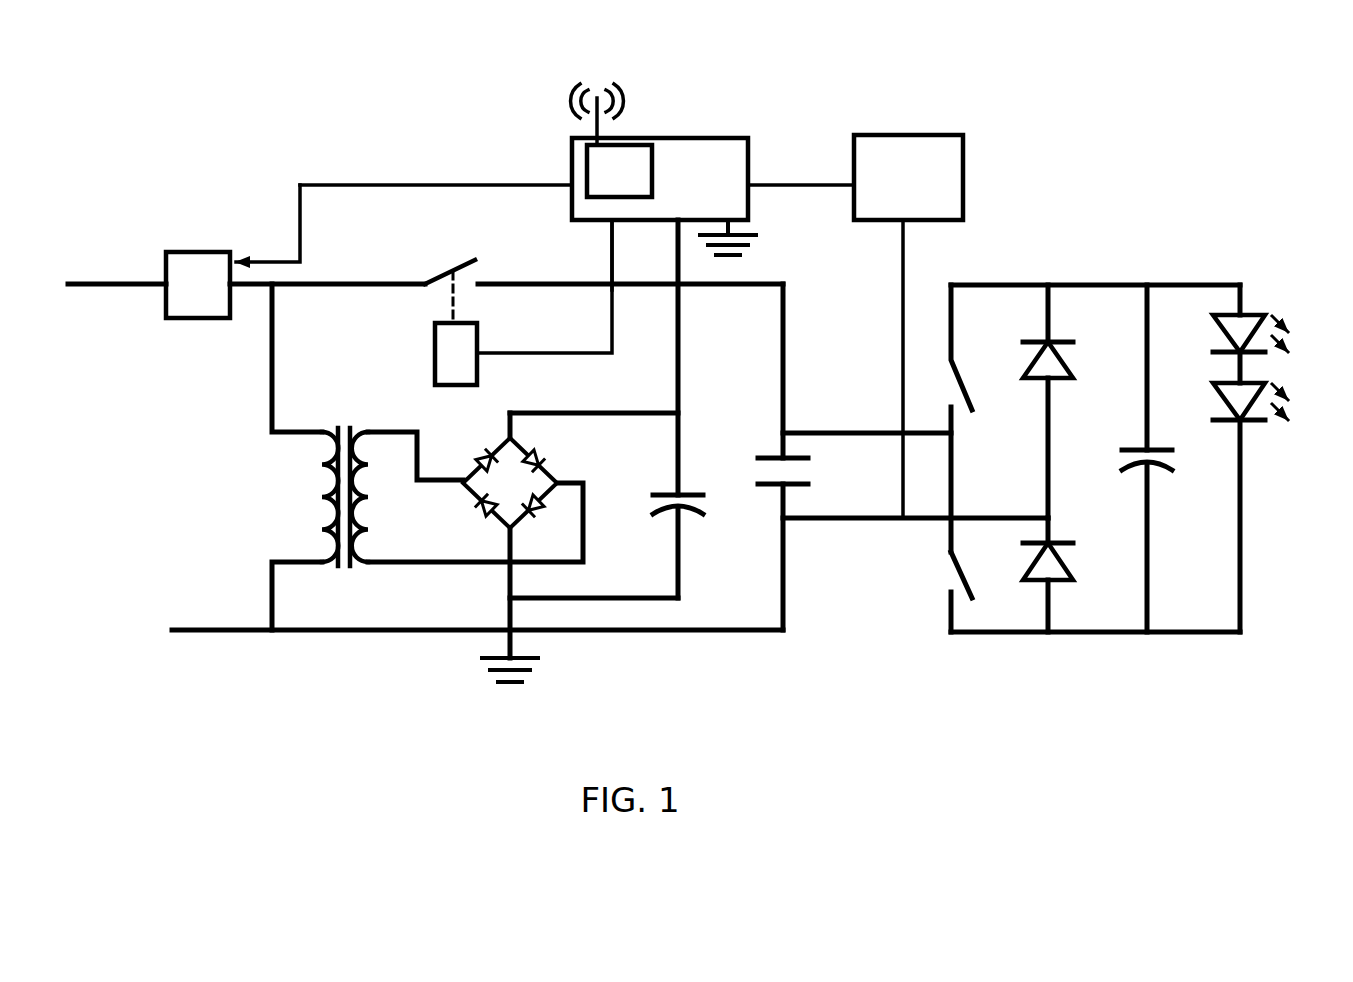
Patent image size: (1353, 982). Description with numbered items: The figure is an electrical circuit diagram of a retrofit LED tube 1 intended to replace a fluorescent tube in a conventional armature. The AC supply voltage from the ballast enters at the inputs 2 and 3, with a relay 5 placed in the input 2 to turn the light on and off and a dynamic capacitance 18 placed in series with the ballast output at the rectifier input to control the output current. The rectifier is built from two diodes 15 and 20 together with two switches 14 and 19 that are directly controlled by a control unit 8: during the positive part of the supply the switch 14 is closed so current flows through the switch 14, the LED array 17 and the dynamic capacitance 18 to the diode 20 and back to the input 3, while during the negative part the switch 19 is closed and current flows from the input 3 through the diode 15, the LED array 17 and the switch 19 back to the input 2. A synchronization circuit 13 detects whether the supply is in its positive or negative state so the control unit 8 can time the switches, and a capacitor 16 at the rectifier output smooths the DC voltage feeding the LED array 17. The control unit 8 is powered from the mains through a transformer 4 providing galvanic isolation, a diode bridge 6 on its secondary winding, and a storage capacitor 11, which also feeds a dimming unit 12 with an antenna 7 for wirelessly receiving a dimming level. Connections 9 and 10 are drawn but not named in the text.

The retrofit LED tube 1 is at (1200, 131).
The AC supply voltage input 2 is at (134, 283).
The AC supply voltage input 3 is at (196, 630).
The transformer 4 is at (323, 497).
The relay 5 is at (437, 330).
The diode bridge 6 is at (462, 540).
The antenna 7 is at (562, 100).
The control unit 8 is at (572, 163).
The control line 9 is at (612, 258).
The DC link capacitor / line 10 is at (588, 598).
The capacitor 11 is at (692, 512).
The dimming unit 12 is at (652, 156).
The synchronization circuit 13 is at (878, 160).
The switch 14 is at (962, 352).
The diode 15 is at (1052, 338).
The capacitor 16 is at (1152, 450).
The LED array 17 is at (1278, 289).
The dynamic capacitance 18 is at (184, 252).
The switch 19 is at (942, 574).
The diode 20 is at (1056, 582).